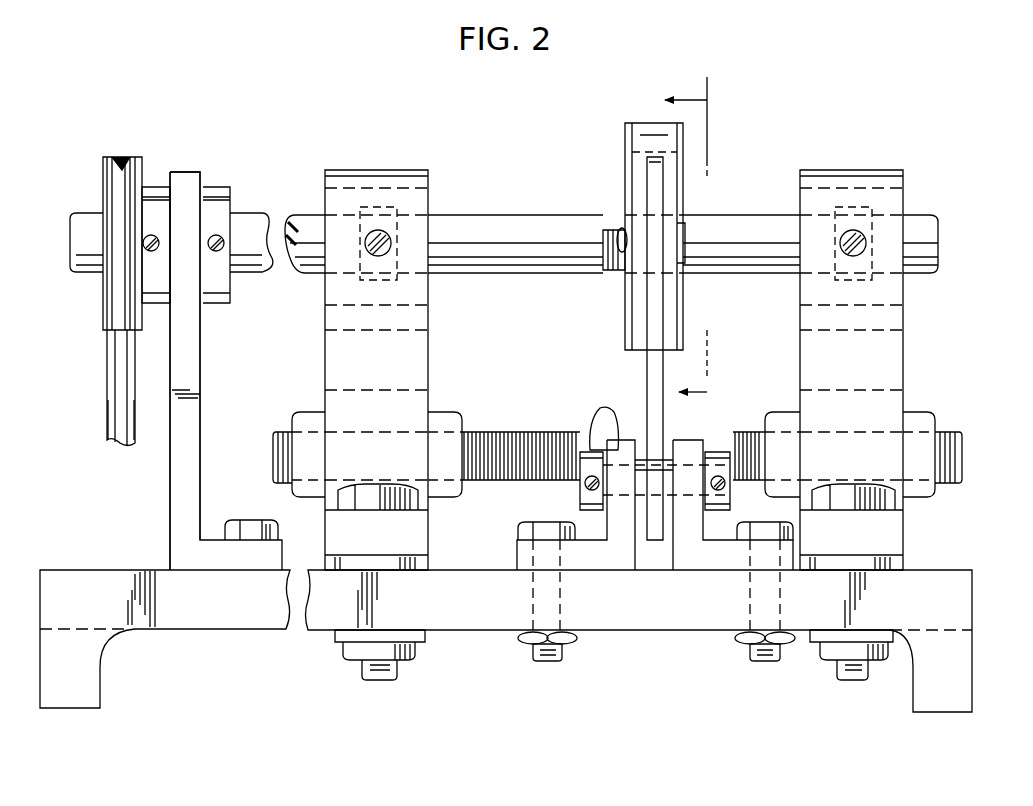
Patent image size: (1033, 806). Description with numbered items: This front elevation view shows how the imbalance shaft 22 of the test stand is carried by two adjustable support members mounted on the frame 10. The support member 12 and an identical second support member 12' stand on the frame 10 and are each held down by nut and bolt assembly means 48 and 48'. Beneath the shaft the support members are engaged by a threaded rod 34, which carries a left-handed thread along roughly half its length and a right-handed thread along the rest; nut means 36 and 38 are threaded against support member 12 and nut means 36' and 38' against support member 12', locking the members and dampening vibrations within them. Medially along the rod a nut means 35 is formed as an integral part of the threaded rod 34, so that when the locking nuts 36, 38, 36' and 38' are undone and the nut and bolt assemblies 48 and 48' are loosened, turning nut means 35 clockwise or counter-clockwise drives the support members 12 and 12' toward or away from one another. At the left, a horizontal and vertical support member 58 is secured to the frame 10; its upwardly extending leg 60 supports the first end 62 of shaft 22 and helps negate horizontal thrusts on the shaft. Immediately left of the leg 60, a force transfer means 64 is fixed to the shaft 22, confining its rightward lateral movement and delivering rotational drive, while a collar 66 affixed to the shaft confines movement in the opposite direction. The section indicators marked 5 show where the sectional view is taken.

The frame 10 is at (240, 617).
The support member 12 is at (854, 344).
The second support member 12' is at (389, 340).
The shaft 22 is at (492, 225).
The threaded rod 34 is at (478, 435).
The nut means 35 is at (607, 410).
The nut means 36 is at (935, 431).
The nut means 36' is at (470, 431).
The nut means 38 is at (777, 431).
The nut means 38' is at (301, 431).
The nut and bolt assembly means 48 is at (893, 509).
The nut and bolt assembly means 48' is at (418, 510).
The horizontal and vertical support member 58 is at (165, 503).
The upwardly extending leg 60 is at (190, 333).
The first end 62 is at (85, 213).
The force transfer means 64 is at (118, 155).
The collar 66 is at (217, 190).
The section line 5- 5 is at (696, 246).